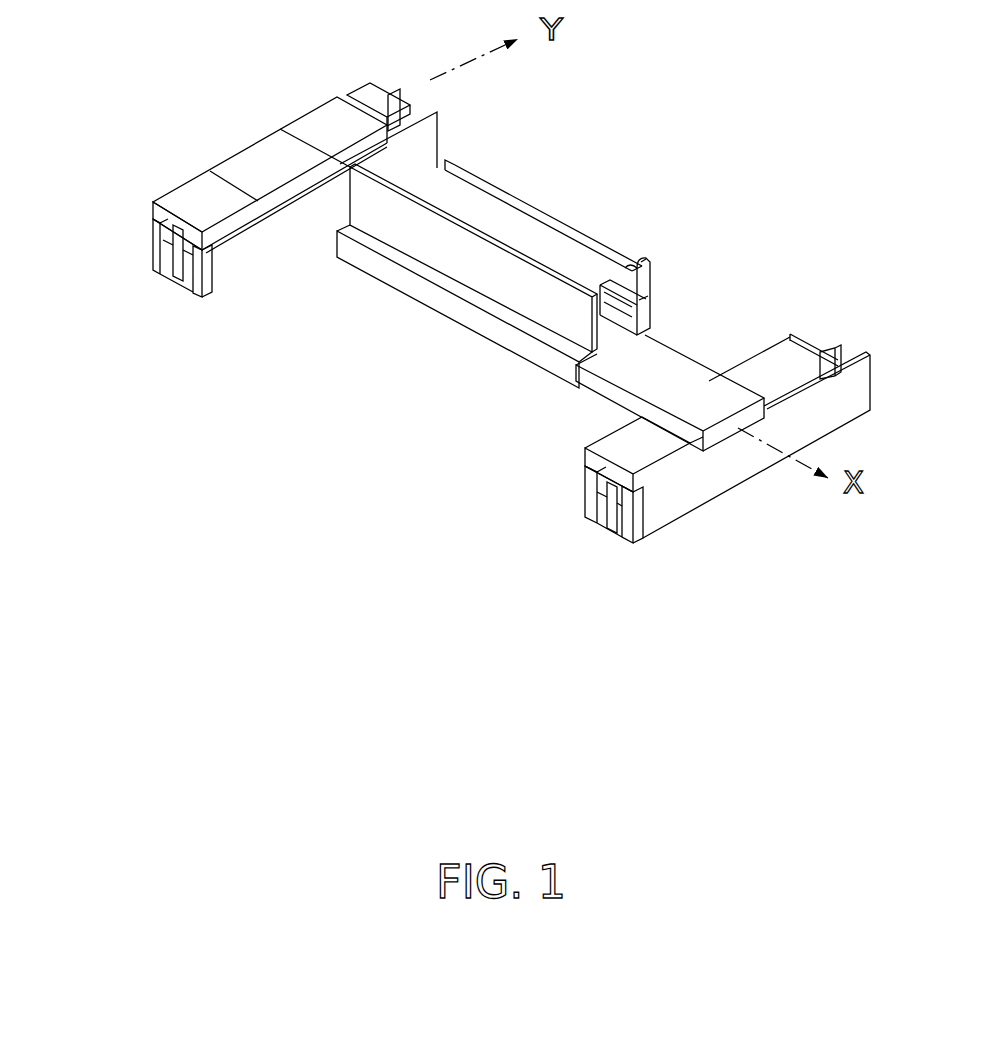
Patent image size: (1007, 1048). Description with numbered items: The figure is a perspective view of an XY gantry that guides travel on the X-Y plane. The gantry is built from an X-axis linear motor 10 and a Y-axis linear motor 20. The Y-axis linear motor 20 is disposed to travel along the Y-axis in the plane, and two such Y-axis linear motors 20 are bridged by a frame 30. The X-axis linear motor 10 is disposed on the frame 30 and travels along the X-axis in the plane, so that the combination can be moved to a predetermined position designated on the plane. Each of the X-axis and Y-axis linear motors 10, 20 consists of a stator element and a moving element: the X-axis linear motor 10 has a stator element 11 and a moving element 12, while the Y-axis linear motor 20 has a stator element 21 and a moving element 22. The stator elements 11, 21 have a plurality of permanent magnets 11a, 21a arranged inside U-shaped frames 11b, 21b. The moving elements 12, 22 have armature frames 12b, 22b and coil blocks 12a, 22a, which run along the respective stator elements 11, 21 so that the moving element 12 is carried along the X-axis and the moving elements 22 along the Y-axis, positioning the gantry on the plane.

The X-axis linear motor 10 is at (567, 197).
The stator element 11 is at (447, 163).
The permanent magnets 11a is at (638, 327).
The U-shaped frame 11b is at (643, 260).
The moving element 12 is at (613, 237).
The coil block 12a is at (646, 305).
The armature frame 12b is at (650, 268).
The Y-axis linear motor 20 is at (271, 110).
The stator element 21 is at (190, 300).
The permanent magnets 21a is at (152, 265).
The U-shaped frame 21b is at (212, 268).
The moving element 22 is at (184, 182).
The coil block 22a is at (187, 290).
The armature frame 22b is at (150, 203).
The frame 30 is at (440, 300).